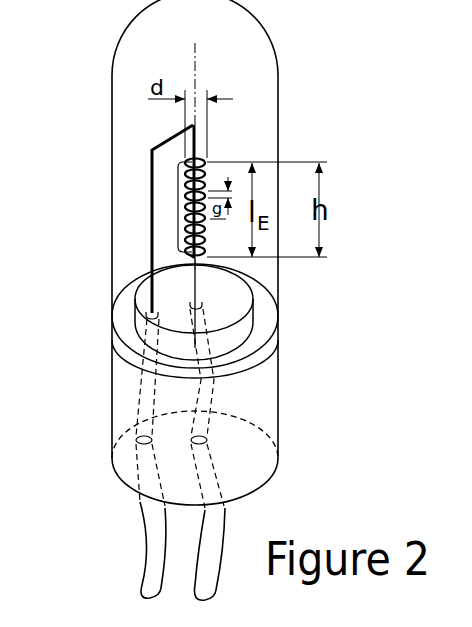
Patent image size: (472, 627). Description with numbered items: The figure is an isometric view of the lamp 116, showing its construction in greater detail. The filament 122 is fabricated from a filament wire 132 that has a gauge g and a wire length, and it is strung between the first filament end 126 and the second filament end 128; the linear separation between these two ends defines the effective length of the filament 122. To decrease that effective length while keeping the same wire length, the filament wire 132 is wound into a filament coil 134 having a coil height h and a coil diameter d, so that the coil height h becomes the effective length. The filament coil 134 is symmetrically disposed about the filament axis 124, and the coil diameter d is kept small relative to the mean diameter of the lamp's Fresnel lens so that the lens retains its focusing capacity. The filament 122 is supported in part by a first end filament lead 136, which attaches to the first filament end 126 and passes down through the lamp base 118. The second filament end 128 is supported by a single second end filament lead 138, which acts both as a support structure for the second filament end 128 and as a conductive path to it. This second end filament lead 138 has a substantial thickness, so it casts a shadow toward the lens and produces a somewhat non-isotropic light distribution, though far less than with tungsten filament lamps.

The lamp 116 is at (312, 85).
The lamp base 118 is at (258, 401).
The filament 122 is at (213, 167).
The filament axis 124 is at (193, 62).
The first filament end 126 is at (208, 265).
The second filament end 128 is at (200, 160).
The filament wire 132 is at (190, 255).
The filament coil 134 is at (178, 208).
The first end filament lead 136 is at (197, 285).
The second end filament lead 138 is at (150, 185).